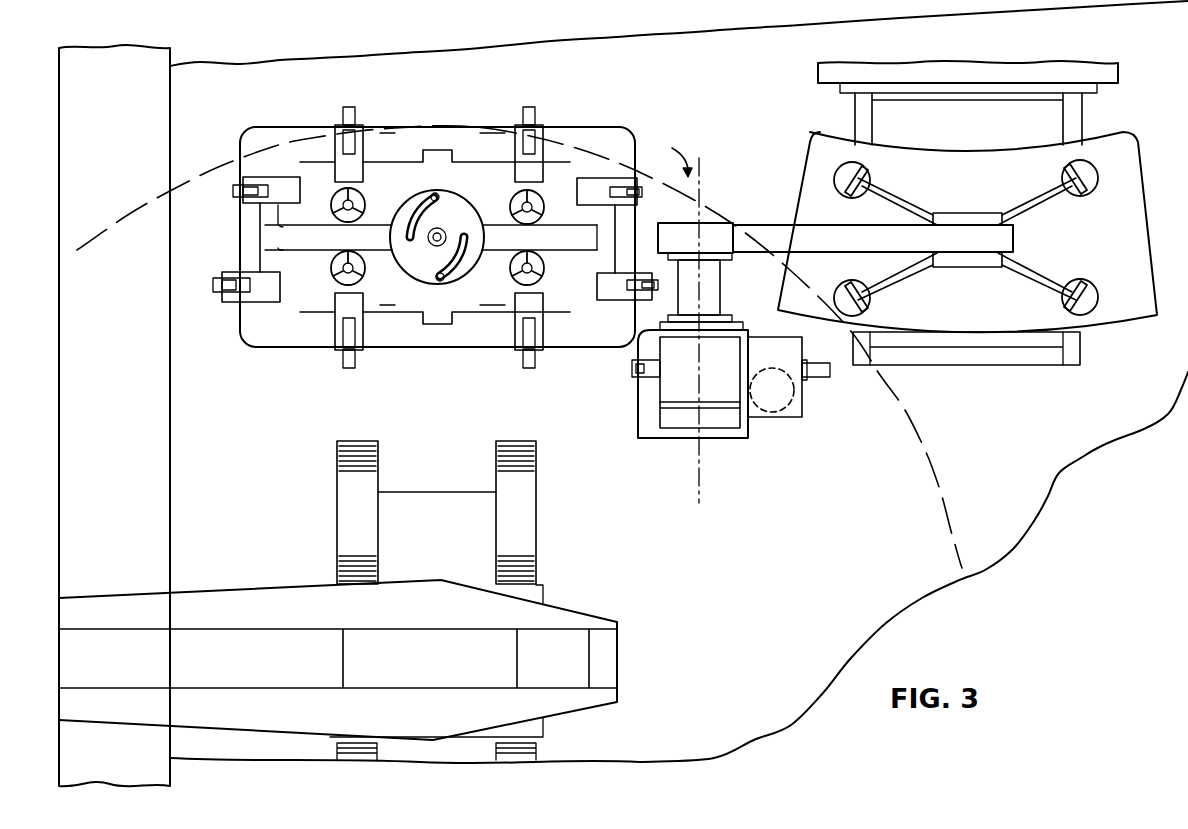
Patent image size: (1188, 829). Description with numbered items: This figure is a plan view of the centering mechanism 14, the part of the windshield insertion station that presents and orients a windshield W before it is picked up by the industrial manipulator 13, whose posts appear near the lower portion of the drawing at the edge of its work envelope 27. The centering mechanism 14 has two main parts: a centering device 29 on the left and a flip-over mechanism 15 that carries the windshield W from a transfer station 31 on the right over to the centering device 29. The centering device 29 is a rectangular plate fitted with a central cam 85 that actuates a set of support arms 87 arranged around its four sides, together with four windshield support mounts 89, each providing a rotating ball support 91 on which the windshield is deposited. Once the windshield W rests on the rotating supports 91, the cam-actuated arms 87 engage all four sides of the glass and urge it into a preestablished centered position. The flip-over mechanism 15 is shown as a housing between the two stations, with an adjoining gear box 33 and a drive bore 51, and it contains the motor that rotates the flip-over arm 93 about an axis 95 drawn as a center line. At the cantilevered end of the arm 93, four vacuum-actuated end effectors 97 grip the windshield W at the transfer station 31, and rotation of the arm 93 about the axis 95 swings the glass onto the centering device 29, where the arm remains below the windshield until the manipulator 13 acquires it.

The industrial manipulator 13 is at (530, 520).
The centering mechanism 14 is at (669, 153).
The flip-over mechanism 15 is at (738, 440).
The work envelope 27 is at (975, 566).
The centering device 29 is at (437, 350).
The transfer station 31 is at (1018, 364).
The gear box 33 is at (792, 418).
The drive shaft bore 51 is at (794, 400).
The cam 85 is at (458, 220).
The support arms 87 is at (443, 150).
The windshield support mounts 89 is at (338, 195).
The rotating ball support 91 is at (342, 207).
The flip-over arm 93 is at (700, 234).
The axis 95 is at (696, 463).
The vacuum-actuated end effectors 97 is at (1086, 192).
The windshield W is at (1118, 314).